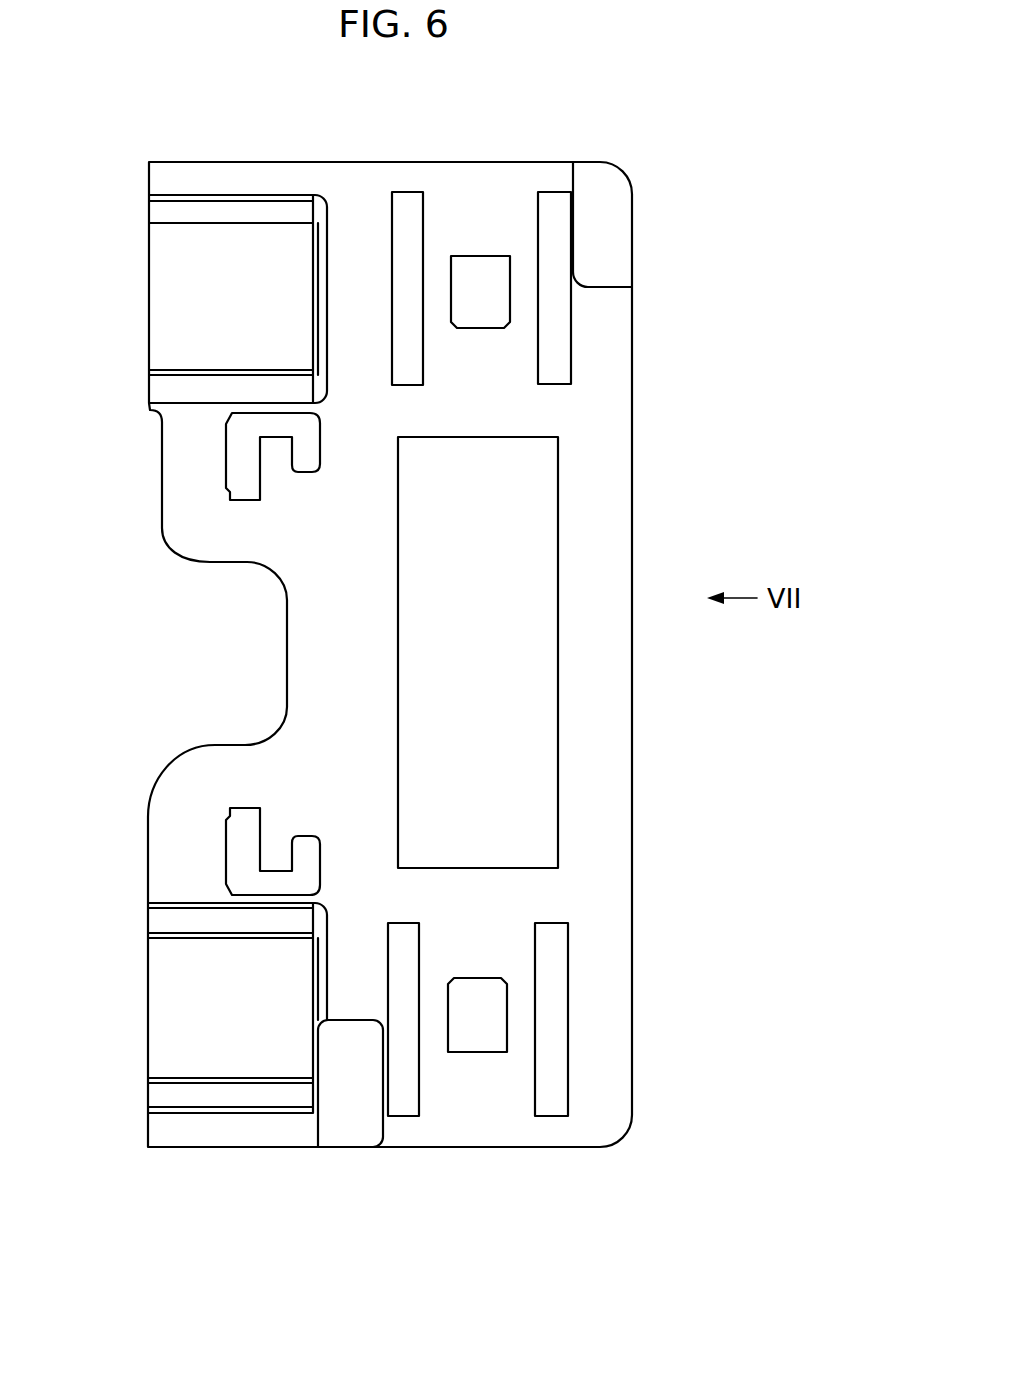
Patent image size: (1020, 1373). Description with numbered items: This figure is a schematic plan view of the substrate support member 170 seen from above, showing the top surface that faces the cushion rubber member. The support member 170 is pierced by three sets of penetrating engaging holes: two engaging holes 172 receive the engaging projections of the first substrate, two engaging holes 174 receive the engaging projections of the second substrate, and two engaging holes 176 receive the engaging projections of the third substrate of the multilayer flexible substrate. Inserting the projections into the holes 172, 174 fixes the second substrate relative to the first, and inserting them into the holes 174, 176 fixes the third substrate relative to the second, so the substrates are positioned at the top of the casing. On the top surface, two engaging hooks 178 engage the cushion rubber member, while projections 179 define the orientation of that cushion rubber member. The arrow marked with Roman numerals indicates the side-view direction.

The substrate support member 170 is at (616, 507).
The engaging hole 172 is at (226, 466).
The engaging hole 174 is at (420, 239).
The engaging hole 176 is at (567, 333).
The engaging hook 178 is at (487, 268).
The projection 179 is at (618, 246).